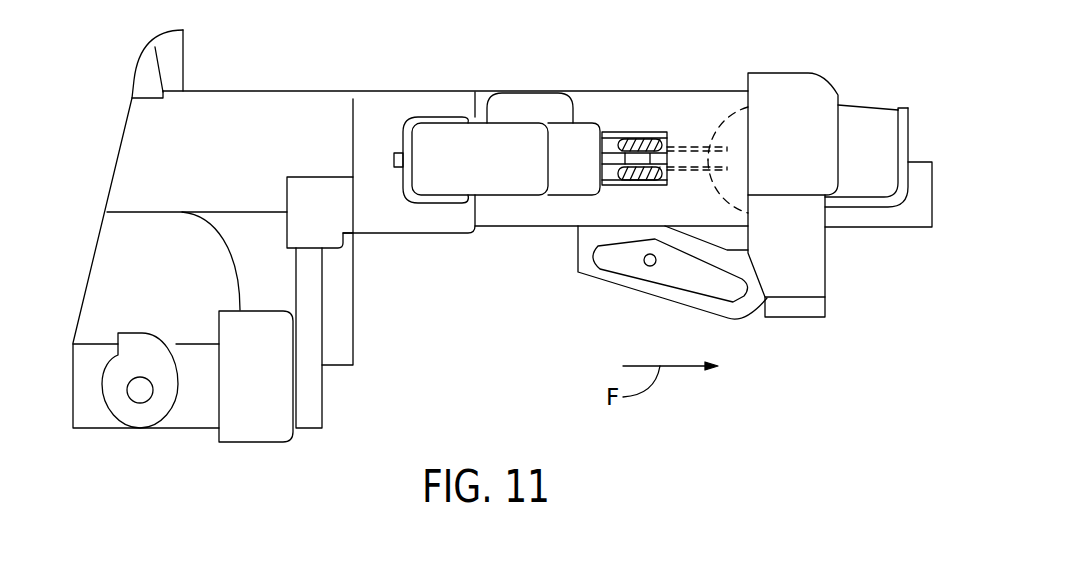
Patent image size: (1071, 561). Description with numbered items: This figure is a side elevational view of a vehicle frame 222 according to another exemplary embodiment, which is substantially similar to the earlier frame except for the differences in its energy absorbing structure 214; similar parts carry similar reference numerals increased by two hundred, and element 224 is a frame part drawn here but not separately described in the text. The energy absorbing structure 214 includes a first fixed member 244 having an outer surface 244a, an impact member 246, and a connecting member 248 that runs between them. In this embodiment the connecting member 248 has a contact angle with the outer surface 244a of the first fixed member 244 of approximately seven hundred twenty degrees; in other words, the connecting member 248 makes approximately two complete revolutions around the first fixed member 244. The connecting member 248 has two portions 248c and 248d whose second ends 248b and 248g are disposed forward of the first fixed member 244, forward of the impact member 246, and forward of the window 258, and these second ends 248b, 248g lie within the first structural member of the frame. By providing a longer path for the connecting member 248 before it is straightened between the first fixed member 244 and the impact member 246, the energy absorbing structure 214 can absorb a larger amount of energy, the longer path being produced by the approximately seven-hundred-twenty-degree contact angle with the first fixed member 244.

The housing 224 is at (260, 91).
The vehicle frame 222 is at (587, 48).
The energy absorbing structure 214 is at (496, 210).
The impact member 246 is at (517, 122).
The window 258 is at (668, 137).
The first fixed member 244 is at (638, 158).
The outer surface 244a is at (625, 158).
The connecting member 248 is at (609, 186).
The second end 248b is at (727, 149).
The portion 248c is at (733, 111).
The second end 248g is at (727, 169).
The portion 248d is at (733, 210).